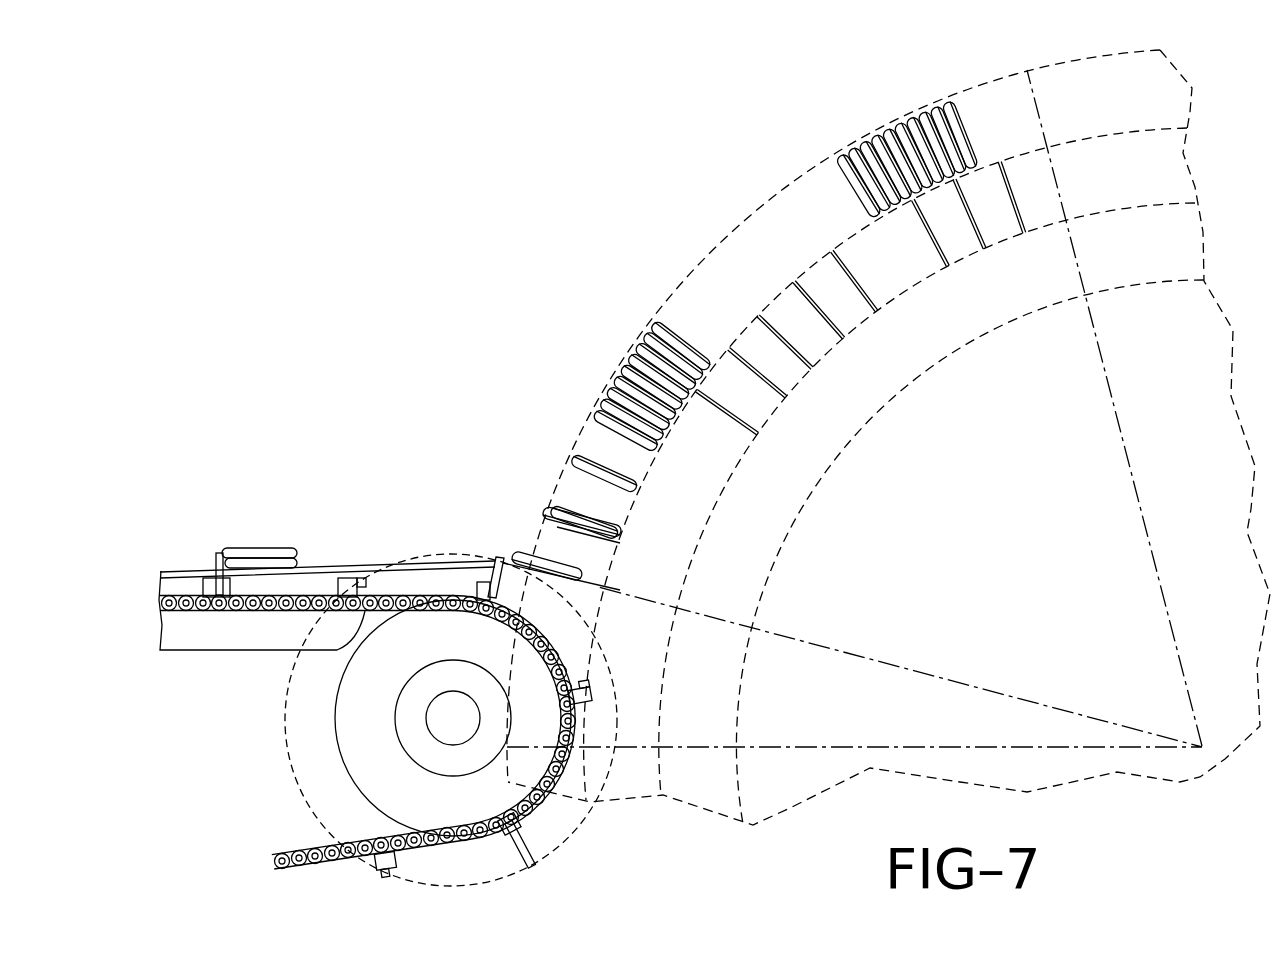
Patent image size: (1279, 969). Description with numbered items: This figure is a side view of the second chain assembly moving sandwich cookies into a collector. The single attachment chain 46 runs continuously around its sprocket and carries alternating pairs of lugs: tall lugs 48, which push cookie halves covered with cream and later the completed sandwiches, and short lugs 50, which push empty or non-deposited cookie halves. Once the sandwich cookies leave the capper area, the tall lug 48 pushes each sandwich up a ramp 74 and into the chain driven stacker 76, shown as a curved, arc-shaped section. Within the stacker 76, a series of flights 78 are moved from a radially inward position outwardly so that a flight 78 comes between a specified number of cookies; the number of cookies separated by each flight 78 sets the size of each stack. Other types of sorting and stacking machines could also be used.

The attachment chain 46 is at (197, 597).
The tall lugs 48 is at (220, 560).
The short lugs 50 is at (356, 585).
The ramp 74 is at (320, 570).
The chain driven stacker 76 is at (934, 596).
The flights 78 is at (772, 450).